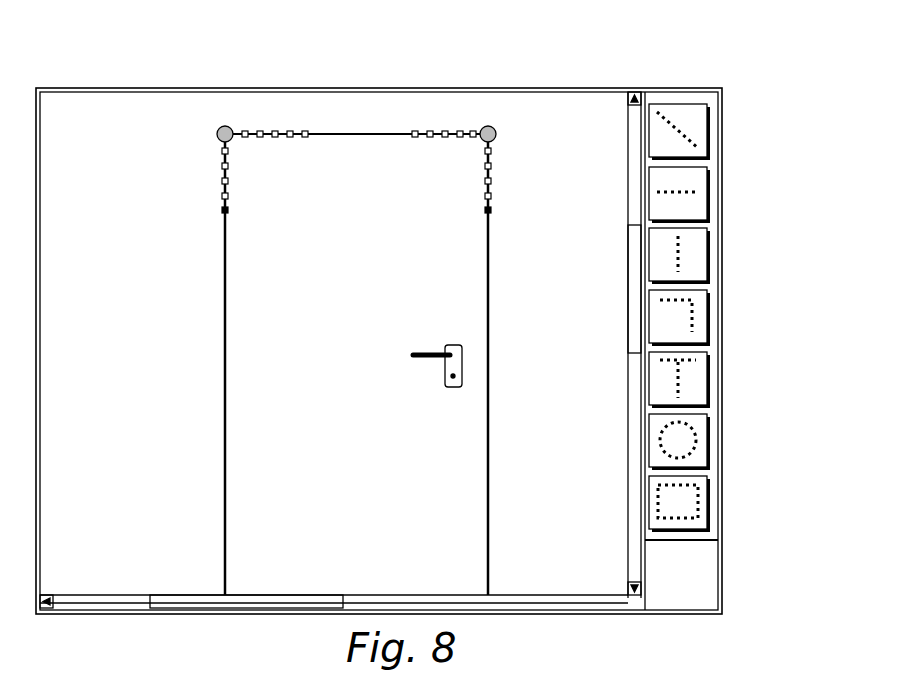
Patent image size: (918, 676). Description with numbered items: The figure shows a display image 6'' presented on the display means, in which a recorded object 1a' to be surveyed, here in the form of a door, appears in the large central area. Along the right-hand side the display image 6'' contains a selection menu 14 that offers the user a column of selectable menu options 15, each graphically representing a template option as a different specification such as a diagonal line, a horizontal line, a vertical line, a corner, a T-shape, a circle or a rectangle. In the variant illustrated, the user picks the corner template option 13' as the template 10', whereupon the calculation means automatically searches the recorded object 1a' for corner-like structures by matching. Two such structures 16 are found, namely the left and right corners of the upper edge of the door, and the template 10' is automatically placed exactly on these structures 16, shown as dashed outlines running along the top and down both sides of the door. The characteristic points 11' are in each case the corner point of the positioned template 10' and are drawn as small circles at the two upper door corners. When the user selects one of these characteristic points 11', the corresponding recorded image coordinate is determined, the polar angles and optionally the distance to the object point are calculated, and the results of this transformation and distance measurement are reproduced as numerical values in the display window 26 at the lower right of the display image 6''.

The display image 6'' is at (374, 321).
The recorded object 1a' is at (356, 311).
The template 10' is at (377, 121).
The characteristic points 11' is at (377, 85).
The structures 16 is at (243, 110).
The selection menu 14 is at (703, 319).
The menu options 15 is at (726, 310).
The corner template option 13' is at (734, 315).
The display window 26 is at (725, 570).